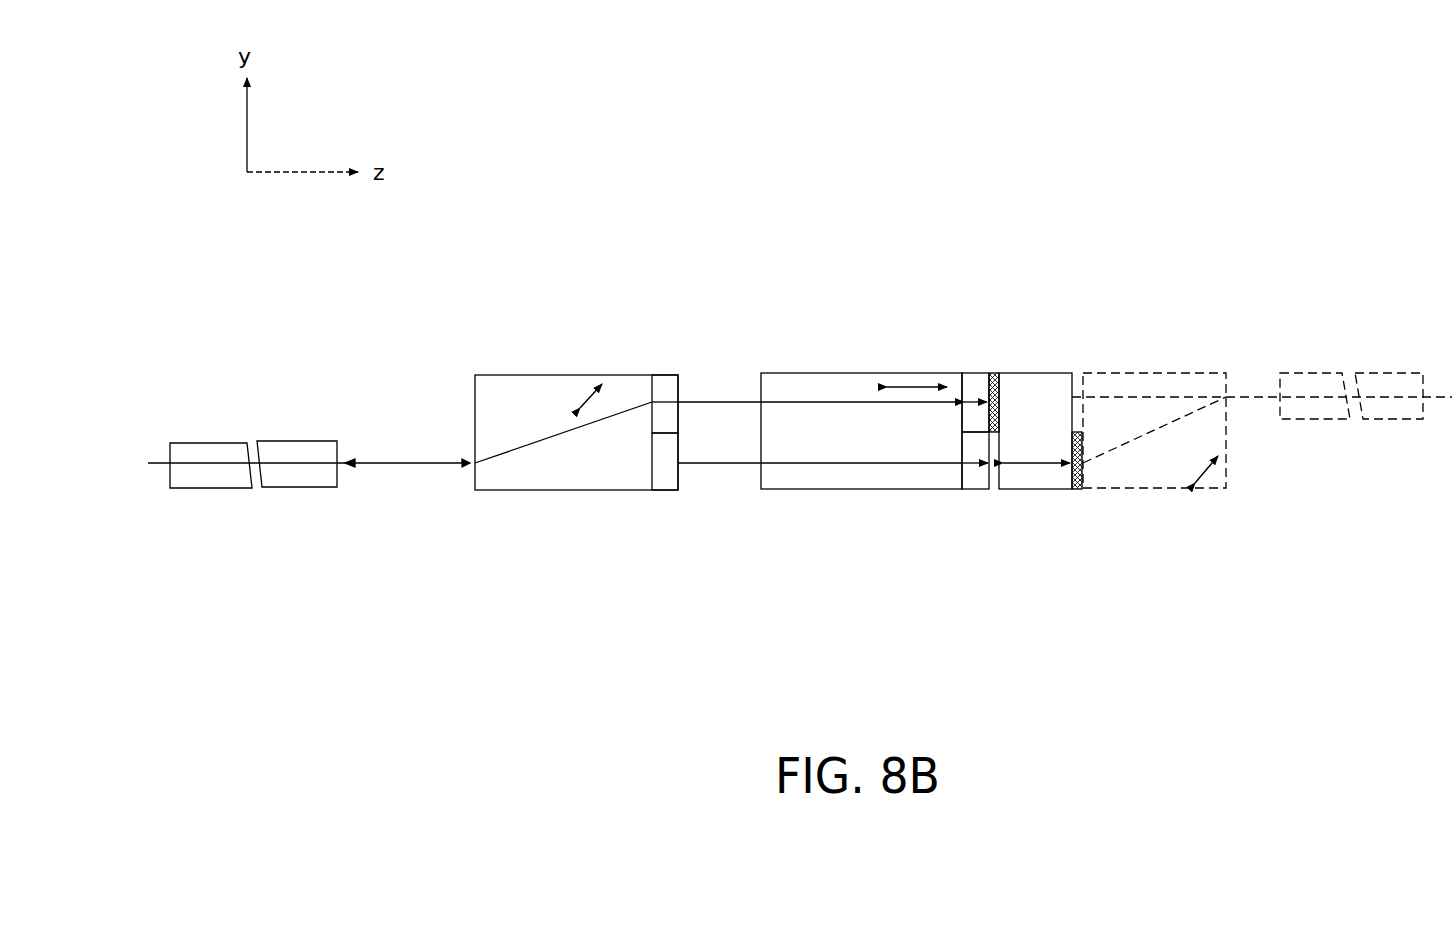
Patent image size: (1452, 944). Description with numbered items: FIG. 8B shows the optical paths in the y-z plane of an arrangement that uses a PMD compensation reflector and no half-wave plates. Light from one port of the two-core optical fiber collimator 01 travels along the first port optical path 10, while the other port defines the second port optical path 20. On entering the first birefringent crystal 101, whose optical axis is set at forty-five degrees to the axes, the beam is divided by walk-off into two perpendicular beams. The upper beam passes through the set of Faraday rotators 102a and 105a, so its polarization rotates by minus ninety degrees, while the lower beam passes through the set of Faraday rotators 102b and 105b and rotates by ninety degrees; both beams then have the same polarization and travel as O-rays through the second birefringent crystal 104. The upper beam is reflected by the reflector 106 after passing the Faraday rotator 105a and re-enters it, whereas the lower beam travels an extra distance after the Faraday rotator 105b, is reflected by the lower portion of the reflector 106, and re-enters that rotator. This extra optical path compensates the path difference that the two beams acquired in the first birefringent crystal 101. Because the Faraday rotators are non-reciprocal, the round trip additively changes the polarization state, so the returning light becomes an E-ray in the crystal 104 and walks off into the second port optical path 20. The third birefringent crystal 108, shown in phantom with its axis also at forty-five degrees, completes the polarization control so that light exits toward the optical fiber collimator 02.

The two-core optical fiber collimator 01 is at (245, 405).
The second port optical path 20 is at (356, 495).
The first port optical path 10 is at (447, 432).
The first birefringent crystal 101 is at (542, 494).
The Faraday rotator 102a is at (661, 373).
The Faraday rotator 102b is at (662, 492).
The second birefringent crystal 104 is at (832, 492).
The Faraday rotator 105a is at (972, 372).
The Faraday rotator 105b is at (975, 492).
The reflector 106 is at (1012, 492).
The third birefringent crystal 108 is at (1105, 373).
The optical fiber collimator 02 is at (1352, 350).